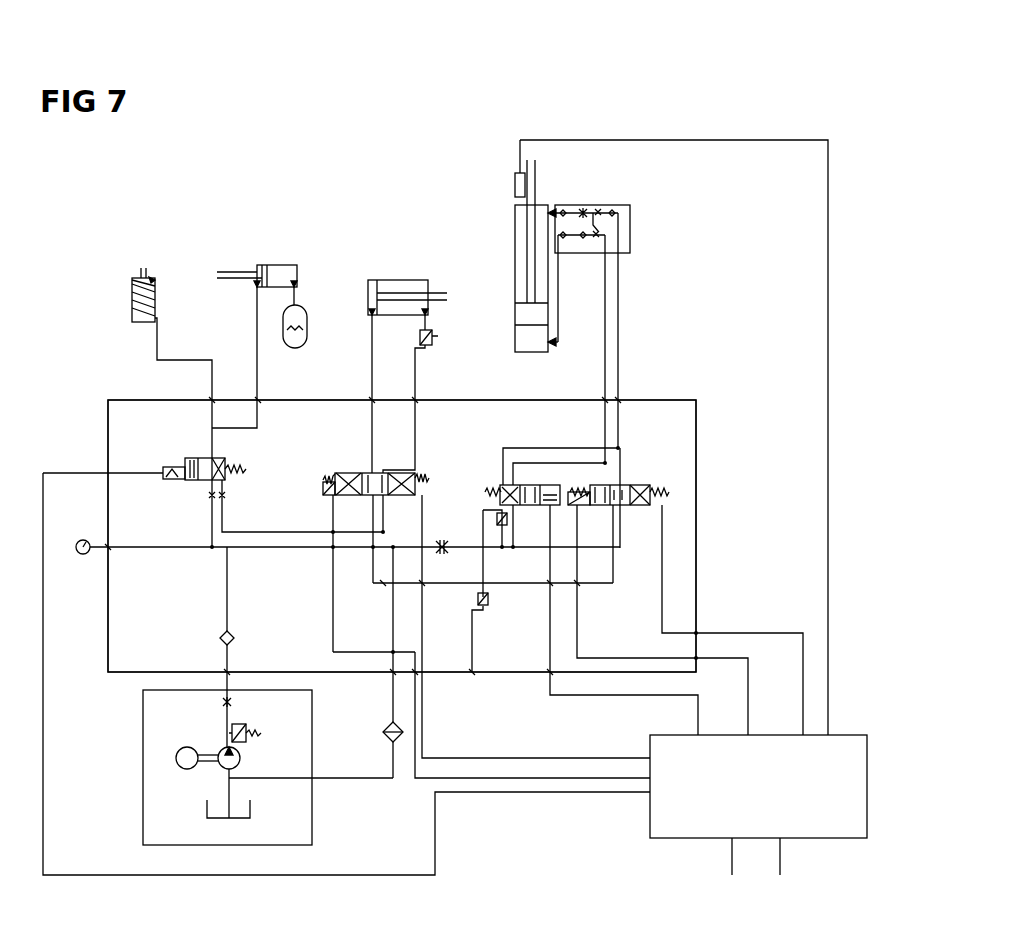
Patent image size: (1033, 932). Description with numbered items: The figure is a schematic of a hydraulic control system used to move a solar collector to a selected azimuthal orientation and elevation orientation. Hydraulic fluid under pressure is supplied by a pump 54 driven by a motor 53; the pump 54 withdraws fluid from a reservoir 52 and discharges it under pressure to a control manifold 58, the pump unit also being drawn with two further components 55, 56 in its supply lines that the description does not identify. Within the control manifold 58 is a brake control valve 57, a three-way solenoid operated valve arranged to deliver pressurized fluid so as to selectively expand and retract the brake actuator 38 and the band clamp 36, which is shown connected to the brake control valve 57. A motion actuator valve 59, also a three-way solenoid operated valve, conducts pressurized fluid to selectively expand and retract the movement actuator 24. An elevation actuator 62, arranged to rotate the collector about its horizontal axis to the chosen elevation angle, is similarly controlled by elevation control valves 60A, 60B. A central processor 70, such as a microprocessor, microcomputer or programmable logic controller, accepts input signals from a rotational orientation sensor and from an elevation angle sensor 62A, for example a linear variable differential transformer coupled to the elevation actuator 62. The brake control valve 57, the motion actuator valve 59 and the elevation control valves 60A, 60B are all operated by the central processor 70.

The movement actuator 24 is at (402, 285).
The band clamp 36 is at (110, 295).
The brake actuator 38 is at (262, 291).
The reservoir 52 is at (202, 802).
The motor 53 is at (148, 741).
The pump 54 is at (283, 719).
The check valve 55 is at (222, 702).
The filter 56 is at (199, 627).
The brake control valve 57 is at (193, 465).
The control manifold 58 is at (697, 541).
The motion actuator valve 59 is at (366, 464).
The elevation control valve 60A is at (502, 478).
The elevation control valve 60B is at (629, 468).
The elevation actuator 62 is at (608, 256).
The elevation angle sensor 62A is at (490, 182).
The central processor 70 is at (805, 793).